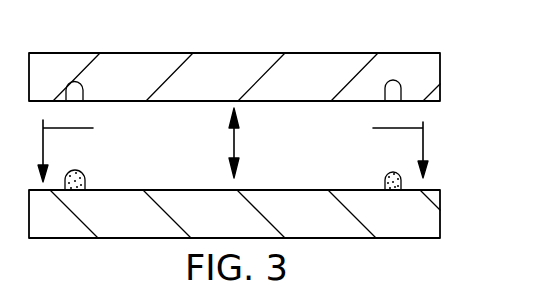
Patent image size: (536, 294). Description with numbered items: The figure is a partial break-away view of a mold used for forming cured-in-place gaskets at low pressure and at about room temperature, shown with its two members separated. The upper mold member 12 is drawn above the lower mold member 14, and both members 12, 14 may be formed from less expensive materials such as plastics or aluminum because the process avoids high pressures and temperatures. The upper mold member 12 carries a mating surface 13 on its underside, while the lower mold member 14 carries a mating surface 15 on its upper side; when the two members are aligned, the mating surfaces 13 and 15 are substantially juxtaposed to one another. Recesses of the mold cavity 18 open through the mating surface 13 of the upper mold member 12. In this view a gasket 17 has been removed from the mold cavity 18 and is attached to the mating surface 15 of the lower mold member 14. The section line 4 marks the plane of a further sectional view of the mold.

The upper mold member 12 is at (368, 53).
The mating surface 13 is at (275, 102).
The lower mold member 14 is at (440, 226).
The mating surface 15 is at (162, 190).
The gasket 17 is at (86, 181).
The mold cavity 18 is at (78, 90).
The section line 4- 4 is at (234, 149).